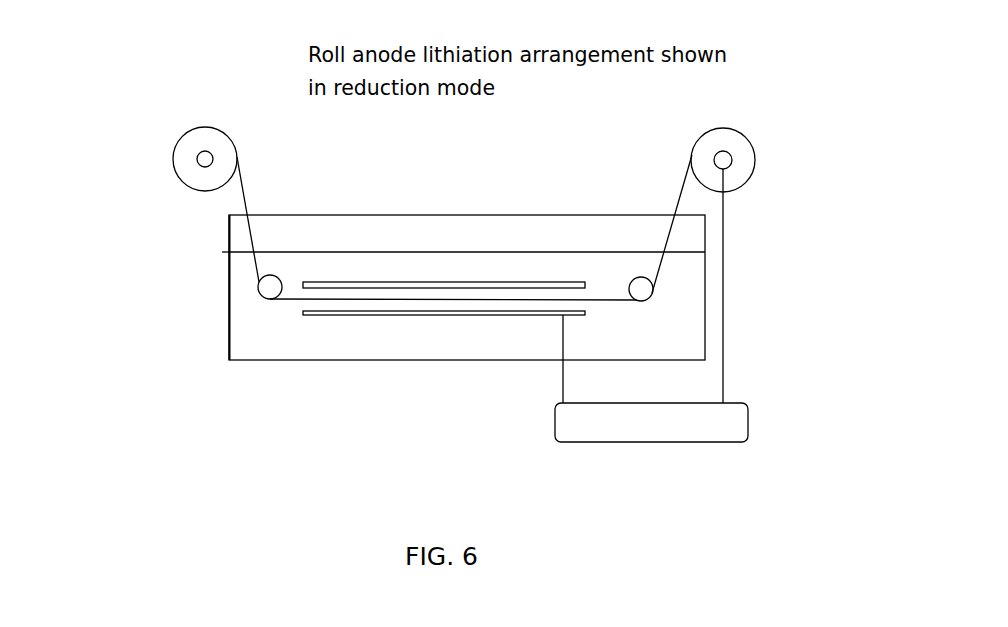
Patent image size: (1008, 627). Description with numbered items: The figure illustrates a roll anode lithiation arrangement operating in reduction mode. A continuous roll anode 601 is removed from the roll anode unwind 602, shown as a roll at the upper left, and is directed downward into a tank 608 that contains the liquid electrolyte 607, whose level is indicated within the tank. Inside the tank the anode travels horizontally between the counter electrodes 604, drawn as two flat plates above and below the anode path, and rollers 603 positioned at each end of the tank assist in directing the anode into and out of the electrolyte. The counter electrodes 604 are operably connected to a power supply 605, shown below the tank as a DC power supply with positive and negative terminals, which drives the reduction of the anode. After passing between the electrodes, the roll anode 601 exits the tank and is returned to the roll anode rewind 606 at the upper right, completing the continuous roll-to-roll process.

The roll anode 601 is at (245, 189).
The roll anode unwind 602 is at (142, 126).
The rollers 603 is at (269, 289).
The counter electrodes 604 is at (365, 313).
The power supply 605 is at (642, 435).
The roll anode rewind 606 is at (745, 155).
The liquid electrolyte 607 is at (238, 294).
The tank 608 is at (304, 362).